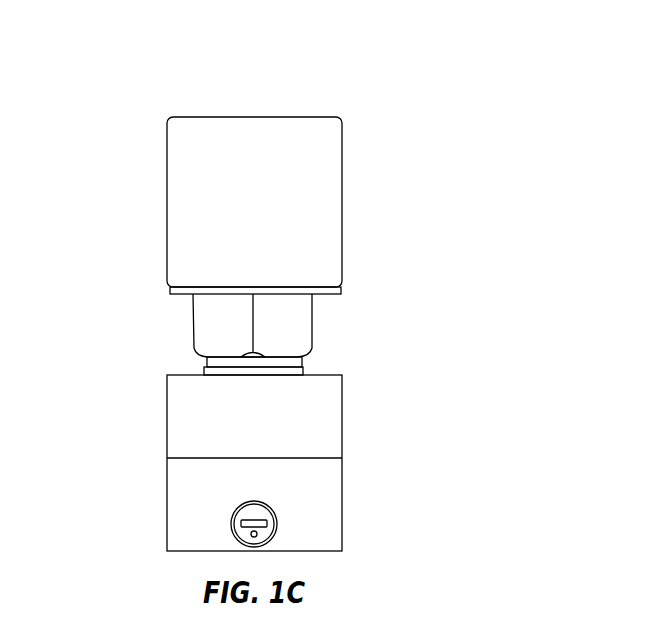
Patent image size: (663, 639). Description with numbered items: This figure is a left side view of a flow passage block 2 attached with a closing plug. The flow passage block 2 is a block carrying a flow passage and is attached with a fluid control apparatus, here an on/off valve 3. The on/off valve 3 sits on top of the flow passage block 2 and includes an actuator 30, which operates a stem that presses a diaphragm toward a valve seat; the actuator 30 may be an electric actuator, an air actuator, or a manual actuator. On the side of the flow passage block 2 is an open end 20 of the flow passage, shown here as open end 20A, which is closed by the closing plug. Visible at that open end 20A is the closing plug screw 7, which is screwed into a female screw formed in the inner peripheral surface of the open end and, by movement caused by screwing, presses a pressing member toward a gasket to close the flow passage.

The on/off valve 3 is at (227, 153).
The actuator 30 is at (185, 237).
The flow passage block 2 is at (343, 427).
The open end 20 is at (154, 465).
The open end 20A is at (235, 507).
The closing plug screw 7 is at (208, 467).